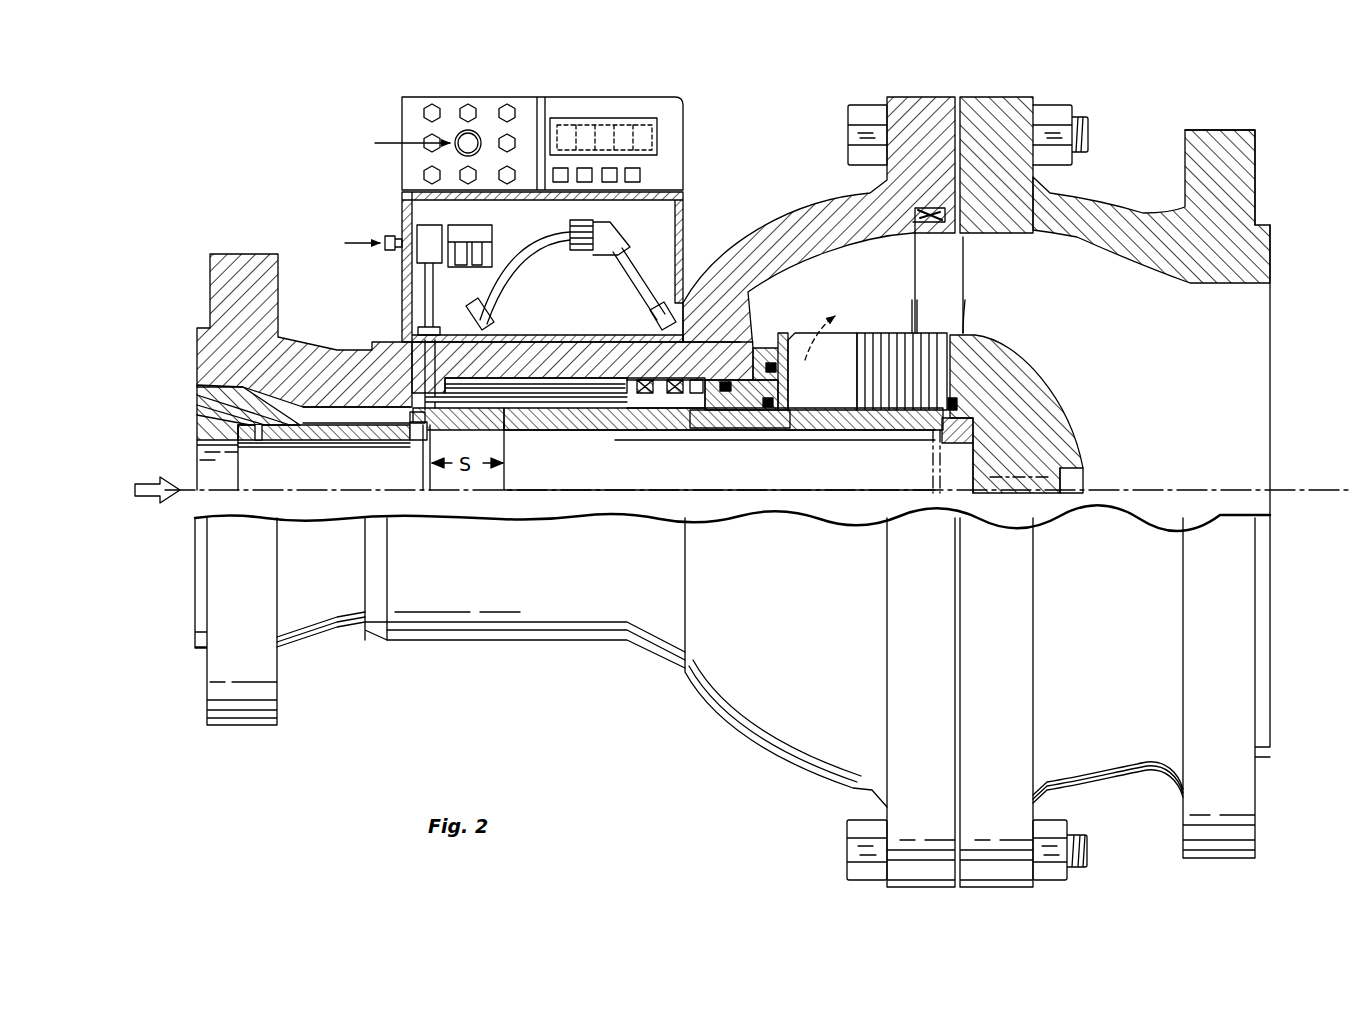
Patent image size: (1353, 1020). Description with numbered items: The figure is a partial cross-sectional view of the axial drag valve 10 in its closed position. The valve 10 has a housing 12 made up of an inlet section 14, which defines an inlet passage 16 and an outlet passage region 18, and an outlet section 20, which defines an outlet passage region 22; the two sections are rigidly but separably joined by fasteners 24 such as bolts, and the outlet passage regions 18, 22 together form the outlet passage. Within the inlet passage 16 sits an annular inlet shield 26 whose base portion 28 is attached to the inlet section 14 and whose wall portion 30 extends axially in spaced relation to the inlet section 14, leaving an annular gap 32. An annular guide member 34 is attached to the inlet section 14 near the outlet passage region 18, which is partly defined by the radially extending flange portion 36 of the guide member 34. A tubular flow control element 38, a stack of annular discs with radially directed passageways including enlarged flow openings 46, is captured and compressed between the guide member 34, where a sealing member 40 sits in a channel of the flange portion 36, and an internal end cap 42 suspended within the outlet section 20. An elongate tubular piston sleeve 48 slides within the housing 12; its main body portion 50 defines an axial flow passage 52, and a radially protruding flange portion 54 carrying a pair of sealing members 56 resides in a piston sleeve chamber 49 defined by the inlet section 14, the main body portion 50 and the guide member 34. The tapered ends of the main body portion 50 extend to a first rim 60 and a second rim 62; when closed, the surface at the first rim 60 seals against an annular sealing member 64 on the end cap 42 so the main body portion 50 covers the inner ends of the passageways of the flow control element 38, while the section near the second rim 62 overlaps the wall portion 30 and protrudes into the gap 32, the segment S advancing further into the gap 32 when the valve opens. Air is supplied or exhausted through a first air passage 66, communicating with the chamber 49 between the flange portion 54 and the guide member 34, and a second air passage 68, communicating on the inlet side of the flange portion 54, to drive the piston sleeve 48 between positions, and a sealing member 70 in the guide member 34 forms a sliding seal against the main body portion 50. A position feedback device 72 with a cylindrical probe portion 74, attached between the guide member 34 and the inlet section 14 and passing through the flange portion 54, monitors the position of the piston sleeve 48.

The axial drag valve 10 is at (1163, 103).
The housing 12 is at (1265, 157).
The inlet section 14 is at (303, 352).
The inlet passage 16 is at (205, 453).
The outlet passage region 18 is at (840, 268).
The outlet section 20 is at (1228, 137).
The outlet passage region 22 is at (1137, 287).
The fasteners 24 is at (1083, 115).
The inlet shield 26 is at (334, 405).
The base portion 28 is at (195, 393).
The wall portion 30 is at (297, 440).
The annular gap 32 is at (372, 417).
The guide member 34 is at (722, 422).
The flange portion 36 is at (770, 348).
The flow control element 38 is at (887, 318).
The sealing member 40 is at (778, 370).
The end cap 42 is at (1040, 453).
The flow openings 46 is at (830, 387).
The piston sleeve 48 is at (623, 445).
The piston sleeve chamber 49 is at (550, 390).
The main body portion 50 is at (582, 422).
The flow passage 52 is at (687, 467).
The flange portion 54 is at (641, 380).
The sealing member 56 is at (672, 380).
The first rim 60 is at (990, 393).
The second rim 62 is at (415, 412).
The sealing member 64 is at (1047, 410).
The first air passage 66 is at (713, 320).
The second air passage 68 is at (450, 328).
The sealing member 70 is at (770, 400).
The position feedback device 72 is at (495, 375).
The probe portion 74 is at (547, 378).